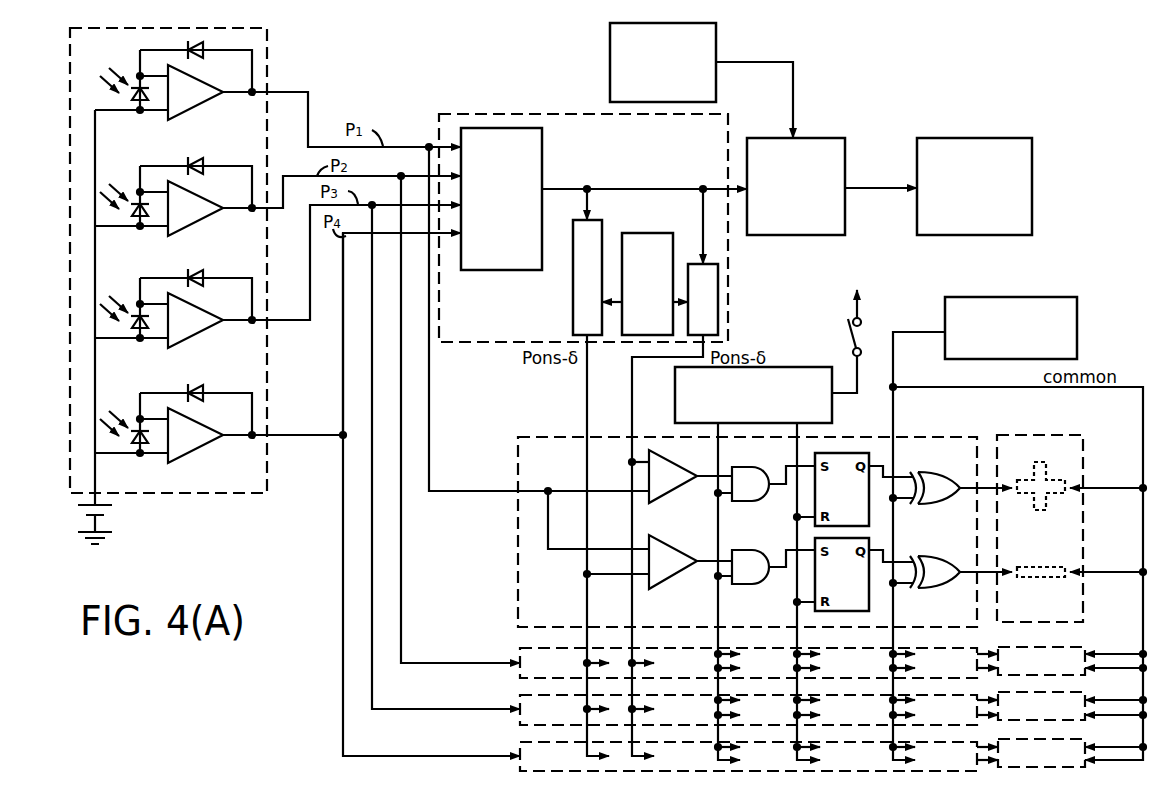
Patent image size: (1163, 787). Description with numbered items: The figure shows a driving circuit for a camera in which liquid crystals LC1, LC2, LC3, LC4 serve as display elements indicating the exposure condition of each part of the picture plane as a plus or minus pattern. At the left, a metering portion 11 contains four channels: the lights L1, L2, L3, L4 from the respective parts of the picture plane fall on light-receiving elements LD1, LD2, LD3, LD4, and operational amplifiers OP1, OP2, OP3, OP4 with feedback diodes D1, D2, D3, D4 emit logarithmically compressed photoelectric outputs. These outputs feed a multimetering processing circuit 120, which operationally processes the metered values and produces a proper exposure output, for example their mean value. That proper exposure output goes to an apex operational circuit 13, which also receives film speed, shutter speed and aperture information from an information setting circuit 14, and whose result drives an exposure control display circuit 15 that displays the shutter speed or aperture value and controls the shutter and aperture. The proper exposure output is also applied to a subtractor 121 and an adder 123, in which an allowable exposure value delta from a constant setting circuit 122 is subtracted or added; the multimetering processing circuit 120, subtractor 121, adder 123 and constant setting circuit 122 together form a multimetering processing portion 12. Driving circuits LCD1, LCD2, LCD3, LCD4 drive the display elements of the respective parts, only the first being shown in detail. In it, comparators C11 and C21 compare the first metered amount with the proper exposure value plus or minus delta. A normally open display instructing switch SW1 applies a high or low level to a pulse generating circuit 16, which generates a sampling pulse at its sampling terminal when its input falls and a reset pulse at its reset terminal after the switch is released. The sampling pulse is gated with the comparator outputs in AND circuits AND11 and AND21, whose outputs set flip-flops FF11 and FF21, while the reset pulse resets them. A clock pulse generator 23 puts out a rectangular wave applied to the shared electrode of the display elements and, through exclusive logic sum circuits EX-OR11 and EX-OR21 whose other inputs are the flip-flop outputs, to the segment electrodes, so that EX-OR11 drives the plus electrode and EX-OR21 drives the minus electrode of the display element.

The metering portion 11 is at (68, 167).
The multimetering processing portion 12 is at (558, 113).
The apex operational circuit 13 is at (828, 138).
The information setting circuit 14 is at (610, 46).
The exposure control display circuit 15 is at (1017, 138).
The pulse generating circuit 16 is at (787, 367).
The clock pulse generator 23 is at (1043, 297).
The multimetering processing circuit 120 is at (542, 149).
The subtractor 121 is at (573, 298).
The constant setting circuit 122 is at (634, 233).
The adder 123 is at (718, 293).
The operational amplifier OP1 is at (200, 104).
The operational amplifier OP2 is at (200, 220).
The operational amplifier OP3 is at (200, 332).
The operational amplifier OP4 is at (200, 447).
The diode D1 is at (199, 55).
The diode D2 is at (199, 171).
The diode D3 is at (199, 283).
The diode D4 is at (199, 398).
The light-receiving element LD1 is at (149, 99).
The light-receiving element LD2 is at (149, 215).
The light-receiving element LD3 is at (149, 327).
The light-receiving element LD4 is at (153, 446).
The light L1 is at (108, 75).
The light L2 is at (108, 191).
The light L3 is at (108, 303).
The light L4 is at (108, 418).
The display instructing switch SW1 is at (846, 330).
The driving circuit LCD1 is at (553, 437).
The driving circuit LCD2 is at (530, 648).
The driving circuit LCD3 is at (530, 695).
The driving circuit LCD4 is at (530, 742).
The liquid crystal display element LC1 is at (1045, 435).
The liquid crystal display element LC2 is at (1072, 647).
The liquid crystal display element LC3 is at (1072, 692).
The liquid crystal display element LC4 is at (1072, 739).
The comparator C11 is at (681, 489).
The comparator C21 is at (681, 575).
The AND circuit AND11 is at (766, 503).
The AND circuit AND21 is at (766, 585).
The flip-flop FF11 is at (864, 489).
The flip-flop FF21 is at (864, 574).
The exclusive logic sum circuit EX-OR11 is at (960, 518).
The exclusive logic sum circuit EX-OR21 is at (960, 602).